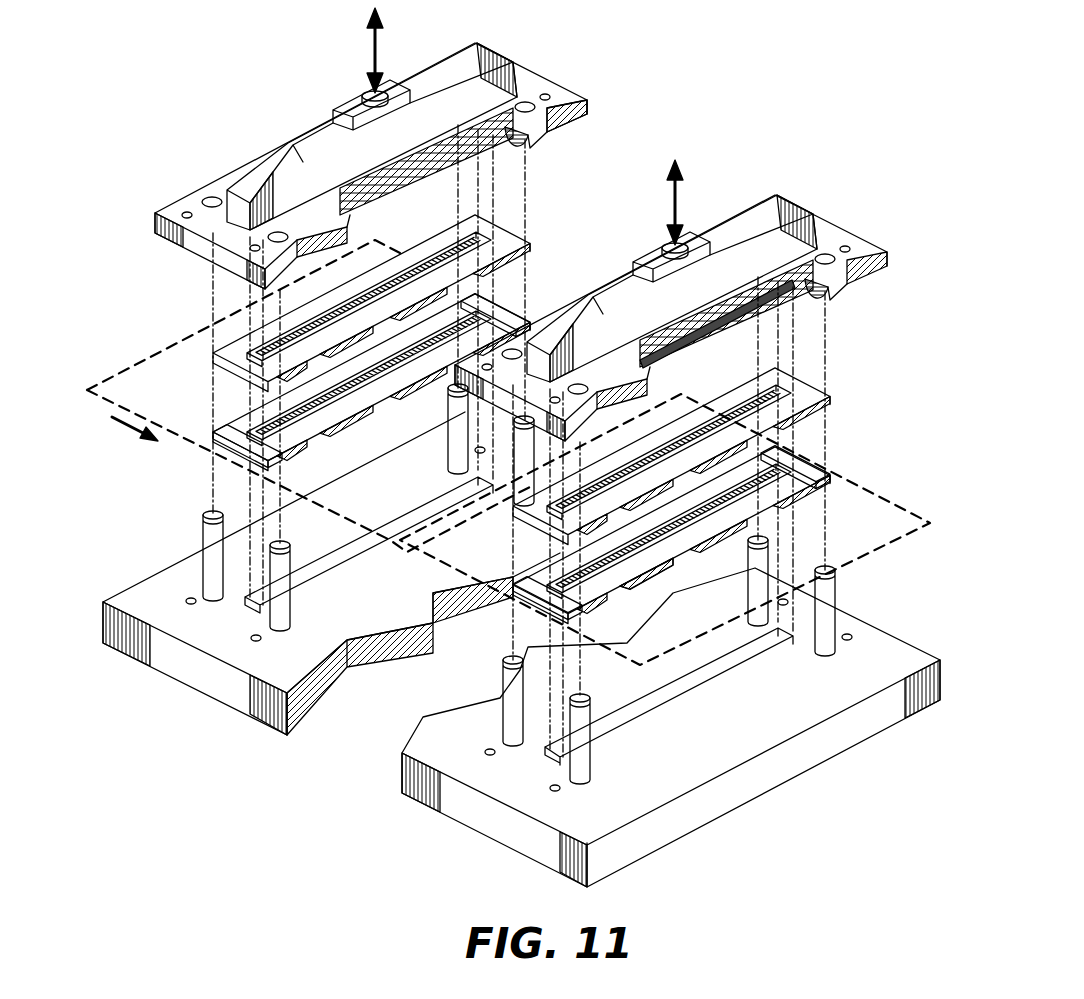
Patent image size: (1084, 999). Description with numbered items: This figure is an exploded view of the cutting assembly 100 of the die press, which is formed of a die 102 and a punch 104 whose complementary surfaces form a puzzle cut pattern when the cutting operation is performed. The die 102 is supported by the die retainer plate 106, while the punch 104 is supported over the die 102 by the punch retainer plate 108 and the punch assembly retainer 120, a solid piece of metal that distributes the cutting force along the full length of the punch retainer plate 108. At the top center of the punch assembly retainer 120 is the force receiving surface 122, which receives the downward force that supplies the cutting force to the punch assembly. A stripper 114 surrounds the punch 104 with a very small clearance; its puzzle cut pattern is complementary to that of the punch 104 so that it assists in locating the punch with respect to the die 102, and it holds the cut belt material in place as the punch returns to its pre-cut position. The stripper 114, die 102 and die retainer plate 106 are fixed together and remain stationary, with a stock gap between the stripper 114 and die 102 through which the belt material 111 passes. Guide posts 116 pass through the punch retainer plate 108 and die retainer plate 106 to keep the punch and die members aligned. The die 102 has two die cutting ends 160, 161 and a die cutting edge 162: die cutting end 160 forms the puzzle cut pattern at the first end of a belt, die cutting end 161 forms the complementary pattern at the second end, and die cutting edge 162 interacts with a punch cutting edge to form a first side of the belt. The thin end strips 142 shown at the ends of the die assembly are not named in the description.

The cutting assembly 100 is at (225, 41).
The die 102 is at (708, 512).
The punch 104 is at (738, 313).
The die retainer plate 106 is at (181, 577).
The punch retainer plate 108 is at (546, 131).
The belt material 111 is at (877, 490).
The stripper 114 is at (509, 241).
The guide posts 116 is at (213, 513).
The punch assembly retainer 120 is at (427, 82).
The force receiving surface 122 is at (366, 92).
The end strip 142 is at (232, 450).
The die cutting end 160 is at (630, 568).
The die cutting end 161 is at (667, 535).
The die cutting edge 162 is at (702, 335).